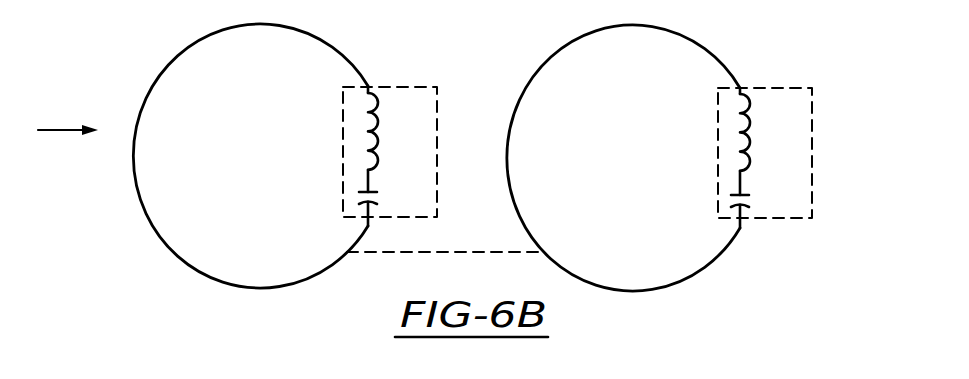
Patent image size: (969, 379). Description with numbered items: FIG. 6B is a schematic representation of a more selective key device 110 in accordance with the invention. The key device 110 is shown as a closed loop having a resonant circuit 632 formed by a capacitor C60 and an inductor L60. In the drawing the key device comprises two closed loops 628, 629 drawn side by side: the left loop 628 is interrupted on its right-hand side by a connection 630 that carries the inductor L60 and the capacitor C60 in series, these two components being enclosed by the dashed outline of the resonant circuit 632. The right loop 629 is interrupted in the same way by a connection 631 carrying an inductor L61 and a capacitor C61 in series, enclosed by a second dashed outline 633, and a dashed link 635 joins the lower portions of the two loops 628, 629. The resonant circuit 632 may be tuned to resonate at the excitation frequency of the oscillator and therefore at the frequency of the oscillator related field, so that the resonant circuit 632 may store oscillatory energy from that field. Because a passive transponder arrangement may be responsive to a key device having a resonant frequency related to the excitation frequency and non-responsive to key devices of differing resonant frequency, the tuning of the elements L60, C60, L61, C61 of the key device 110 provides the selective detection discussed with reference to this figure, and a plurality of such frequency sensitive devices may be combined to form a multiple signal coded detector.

The key device 110 is at (68, 119).
The first lens element 628 is at (458, 16).
The second lens element 629 is at (840, 23).
The first connection wire 630 is at (366, 49).
The second connection wire 631 is at (736, 76).
The resonant circuit 632 is at (405, 88).
The second tuning circuit 633 is at (783, 89).
The interconnecting link 635 is at (457, 252).
The inductor L60 is at (396, 131).
The capacitor C60 is at (389, 200).
The inductor L61 is at (766, 132).
The capacitor C61 is at (763, 201).